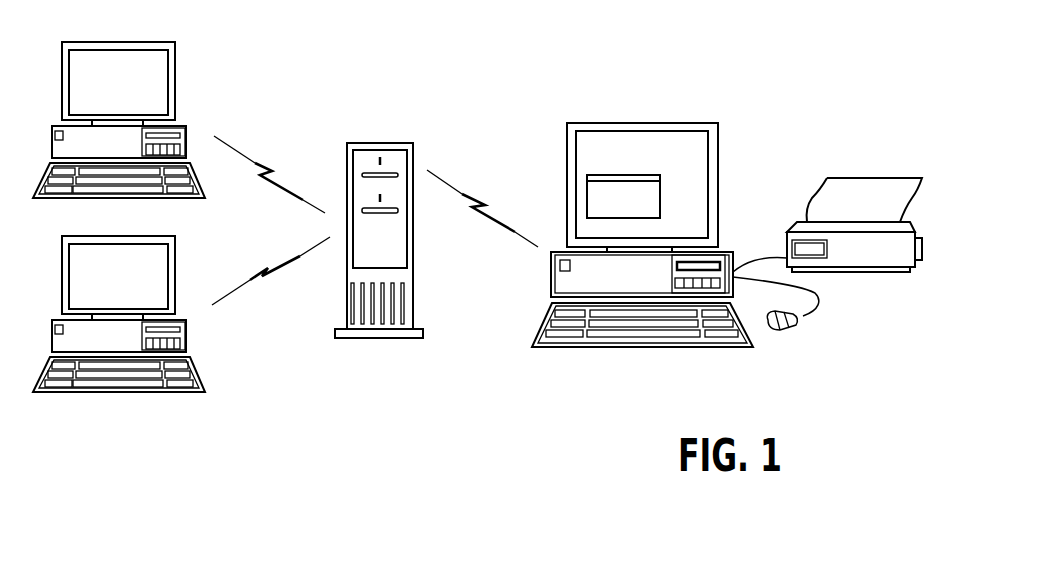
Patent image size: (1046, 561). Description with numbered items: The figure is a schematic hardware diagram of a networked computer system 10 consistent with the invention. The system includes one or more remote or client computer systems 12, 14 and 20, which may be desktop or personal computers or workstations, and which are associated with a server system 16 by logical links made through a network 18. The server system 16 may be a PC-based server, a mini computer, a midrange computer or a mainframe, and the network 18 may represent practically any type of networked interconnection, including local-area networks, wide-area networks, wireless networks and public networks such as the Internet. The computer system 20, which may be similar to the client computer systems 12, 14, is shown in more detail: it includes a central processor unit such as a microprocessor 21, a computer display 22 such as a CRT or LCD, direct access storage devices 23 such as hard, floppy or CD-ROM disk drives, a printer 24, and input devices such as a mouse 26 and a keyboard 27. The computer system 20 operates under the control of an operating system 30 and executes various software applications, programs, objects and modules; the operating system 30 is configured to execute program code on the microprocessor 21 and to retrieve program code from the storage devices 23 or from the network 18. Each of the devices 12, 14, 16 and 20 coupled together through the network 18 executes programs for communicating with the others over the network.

The networked computer system 10 is at (511, 61).
The client computer system 12 is at (157, 42).
The client computer system 14 is at (157, 236).
The server system 16 is at (372, 143).
The network 18 is at (247, 155).
The computer system 20 is at (727, 230).
The microprocessor 21 is at (660, 254).
The computer display 22 is at (642, 171).
The direct access storage device 23 is at (720, 288).
The printer 24 is at (858, 272).
The mouse 26 is at (797, 323).
The keyboard 27 is at (543, 347).
The operating system 30 is at (646, 174).